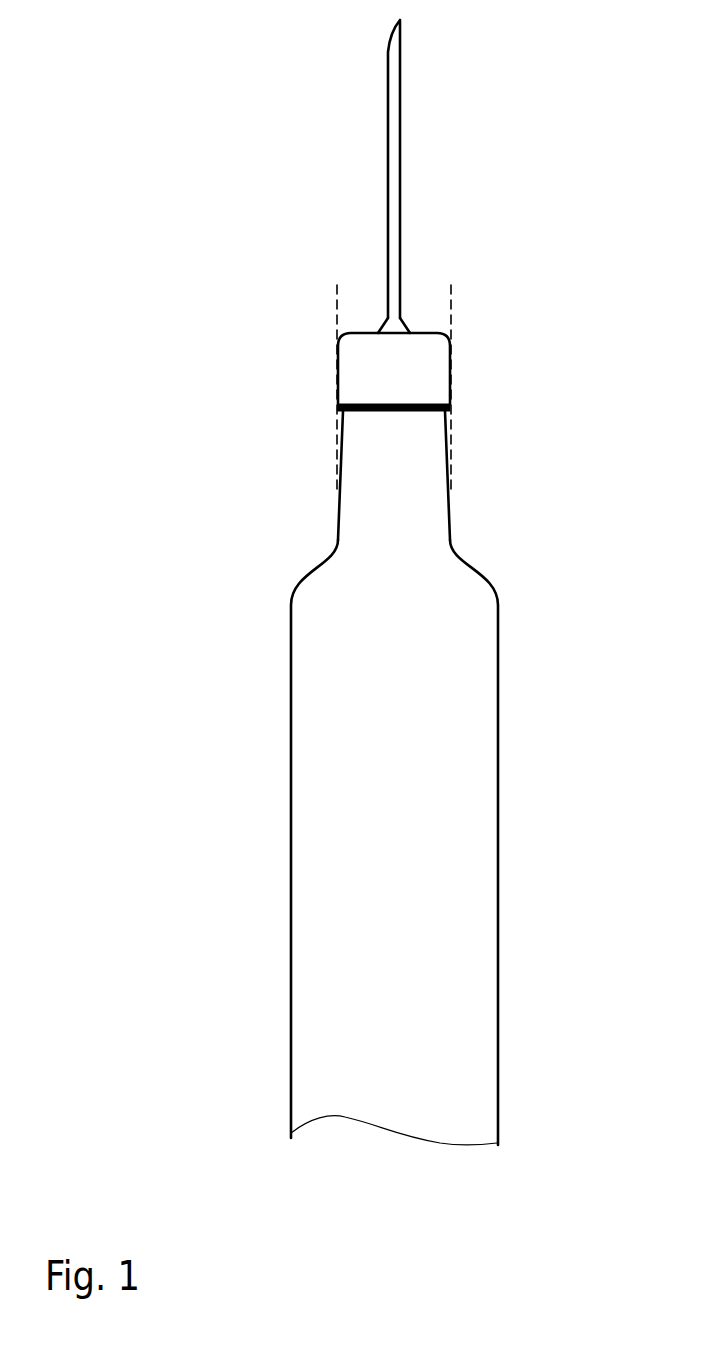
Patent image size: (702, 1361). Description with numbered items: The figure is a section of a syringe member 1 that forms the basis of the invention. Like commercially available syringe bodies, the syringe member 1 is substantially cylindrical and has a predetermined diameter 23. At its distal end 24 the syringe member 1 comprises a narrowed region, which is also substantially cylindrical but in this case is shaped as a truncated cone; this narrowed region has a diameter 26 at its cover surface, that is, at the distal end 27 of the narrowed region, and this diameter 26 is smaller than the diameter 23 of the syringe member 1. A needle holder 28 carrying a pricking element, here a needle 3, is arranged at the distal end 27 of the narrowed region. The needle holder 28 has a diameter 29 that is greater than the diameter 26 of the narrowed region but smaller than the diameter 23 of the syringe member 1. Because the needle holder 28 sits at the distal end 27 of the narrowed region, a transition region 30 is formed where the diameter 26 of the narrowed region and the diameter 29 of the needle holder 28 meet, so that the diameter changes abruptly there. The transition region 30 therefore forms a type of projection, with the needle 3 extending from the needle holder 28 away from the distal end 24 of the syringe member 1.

The syringe member 1 is at (484, 693).
The needle 3 is at (394, 197).
The diameter of the syringe member 23 is at (232, 904).
The distal end of the syringe member 24 is at (191, 460).
The diameter of the narrowed region 26 is at (353, 437).
The distal end of the narrowed region 27 is at (328, 388).
The needle holder 28 is at (430, 352).
The diameter of the needle holder 29 is at (461, 388).
The transition region 30 is at (450, 408).